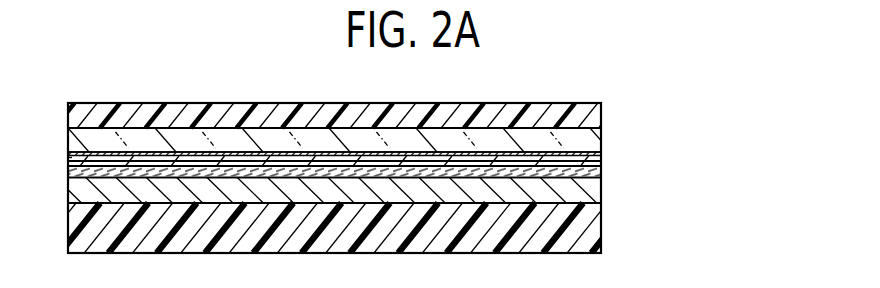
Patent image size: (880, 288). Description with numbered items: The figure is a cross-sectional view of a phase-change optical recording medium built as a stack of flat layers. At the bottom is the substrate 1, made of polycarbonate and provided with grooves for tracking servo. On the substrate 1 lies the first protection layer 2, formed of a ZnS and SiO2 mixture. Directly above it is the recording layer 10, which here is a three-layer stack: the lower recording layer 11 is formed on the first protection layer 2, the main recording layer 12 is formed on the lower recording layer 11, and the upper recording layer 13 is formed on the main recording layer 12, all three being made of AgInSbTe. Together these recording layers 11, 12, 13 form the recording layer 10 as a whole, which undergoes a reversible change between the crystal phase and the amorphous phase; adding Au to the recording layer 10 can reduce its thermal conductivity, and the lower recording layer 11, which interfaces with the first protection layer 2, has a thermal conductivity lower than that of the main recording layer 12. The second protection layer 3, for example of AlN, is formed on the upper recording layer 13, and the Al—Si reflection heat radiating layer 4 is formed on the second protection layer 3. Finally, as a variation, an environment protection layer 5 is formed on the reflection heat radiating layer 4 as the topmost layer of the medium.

The substrate 1 is at (601, 228).
The first protection layer 2 is at (601, 193).
The second protection layer 3 is at (70, 158).
The reflection heat radiating layer 4 is at (70, 130).
The environment protection layer 5 is at (70, 104).
The recording layer 10 is at (431, 119).
The lower recording layer 11 is at (393, 155).
The main recording layer 12 is at (601, 168).
The upper recording layer 13 is at (601, 161).